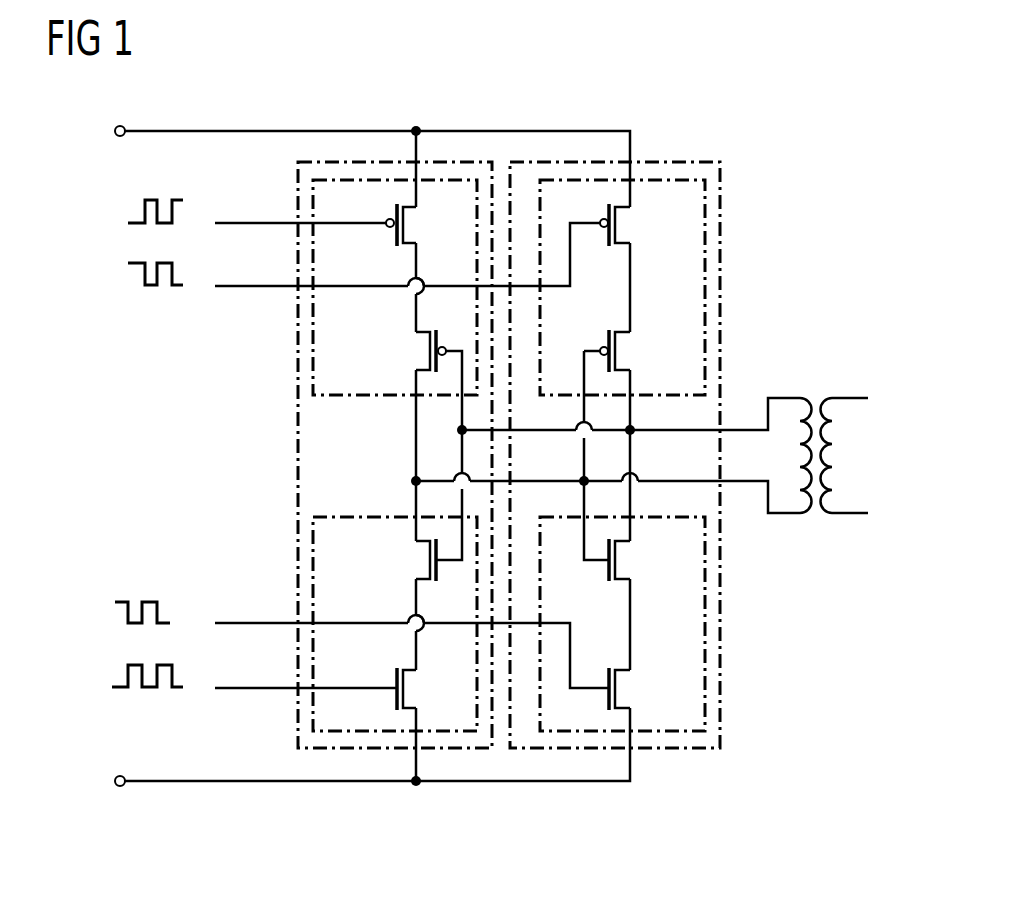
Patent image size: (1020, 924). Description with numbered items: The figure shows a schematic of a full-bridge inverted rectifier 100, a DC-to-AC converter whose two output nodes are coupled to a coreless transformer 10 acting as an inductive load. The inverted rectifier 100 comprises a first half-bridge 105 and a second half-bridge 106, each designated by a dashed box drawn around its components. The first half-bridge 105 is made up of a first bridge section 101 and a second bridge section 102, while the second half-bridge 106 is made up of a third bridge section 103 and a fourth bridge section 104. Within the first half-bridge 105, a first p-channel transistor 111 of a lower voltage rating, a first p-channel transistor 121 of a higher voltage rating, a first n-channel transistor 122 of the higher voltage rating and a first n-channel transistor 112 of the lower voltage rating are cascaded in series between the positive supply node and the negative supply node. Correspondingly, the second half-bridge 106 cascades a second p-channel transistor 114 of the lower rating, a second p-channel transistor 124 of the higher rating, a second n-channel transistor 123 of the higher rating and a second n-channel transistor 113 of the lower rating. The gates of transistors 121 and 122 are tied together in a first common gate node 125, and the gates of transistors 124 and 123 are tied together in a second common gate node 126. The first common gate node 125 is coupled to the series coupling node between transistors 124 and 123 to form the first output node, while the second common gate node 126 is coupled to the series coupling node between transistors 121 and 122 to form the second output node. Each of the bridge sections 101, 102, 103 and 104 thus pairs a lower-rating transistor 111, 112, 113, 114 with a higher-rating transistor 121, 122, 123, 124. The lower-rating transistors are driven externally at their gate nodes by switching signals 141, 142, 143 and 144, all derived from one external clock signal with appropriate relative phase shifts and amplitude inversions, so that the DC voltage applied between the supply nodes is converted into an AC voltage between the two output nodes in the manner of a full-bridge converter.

The full-bridge inverted rectifier 100 is at (430, 796).
The coreless transformer 10 is at (820, 398).
The first bridge section 101 is at (313, 372).
The second bridge section 102 is at (313, 543).
The third bridge section 103 is at (705, 622).
The fourth bridge section 104 is at (705, 285).
The first half-bridge 105 is at (298, 440).
The second half-bridge 106 is at (720, 222).
The first p-channel transistor of the first class 111 is at (393, 210).
The first n-channel transistor of the first class 112 is at (393, 679).
The second n-channel transistor of the first class 113 is at (618, 689).
The second p-channel transistor of the first class 114 is at (618, 224).
The first p-channel transistor of the second class 121 is at (430, 352).
The first n-channel transistor of the second class 122 is at (430, 560).
The second n-channel transistor of the second class 123 is at (618, 560).
The second p-channel transistor of the second class 124 is at (618, 352).
The first common gate node 125 is at (462, 430).
The second common gate node 126 is at (584, 481).
The switching signal 141 is at (128, 222).
The switching signal 142 is at (112, 684).
The switching signal 143 is at (115, 606).
The switching signal 144 is at (128, 263).